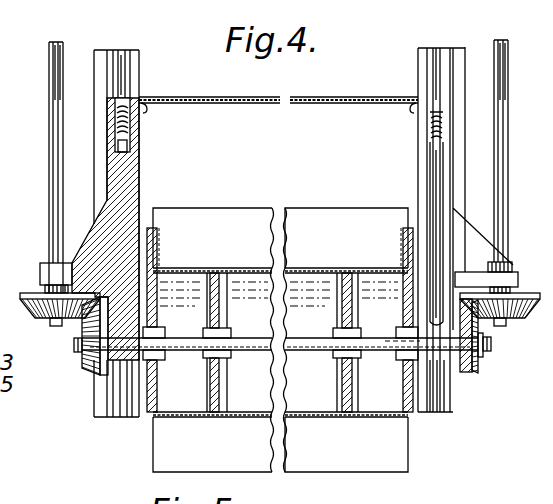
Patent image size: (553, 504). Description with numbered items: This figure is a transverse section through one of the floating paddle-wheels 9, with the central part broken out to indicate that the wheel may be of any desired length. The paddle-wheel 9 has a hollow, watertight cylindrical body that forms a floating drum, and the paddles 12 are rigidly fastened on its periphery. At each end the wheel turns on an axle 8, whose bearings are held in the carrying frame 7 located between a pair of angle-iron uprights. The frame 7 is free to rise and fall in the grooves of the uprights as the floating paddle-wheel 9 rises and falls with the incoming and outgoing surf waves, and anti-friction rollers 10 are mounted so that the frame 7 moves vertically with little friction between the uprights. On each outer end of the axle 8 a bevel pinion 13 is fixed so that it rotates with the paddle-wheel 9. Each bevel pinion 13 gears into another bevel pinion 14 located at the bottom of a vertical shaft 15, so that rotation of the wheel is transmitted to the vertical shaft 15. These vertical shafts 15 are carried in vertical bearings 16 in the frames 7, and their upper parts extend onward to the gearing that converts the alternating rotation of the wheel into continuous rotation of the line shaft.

The carrying frame 7 is at (133, 170).
The axle 8 is at (73, 344).
The floating paddle-wheel 9 is at (280, 330).
The anti-friction roller 10 is at (132, 132).
The paddle 12 is at (280, 340).
The bevel pinion 13 is at (88, 365).
The bevel pinion 14 is at (30, 300).
The vertical shaft 15 is at (49, 207).
The vertical bearing 16 is at (46, 263).